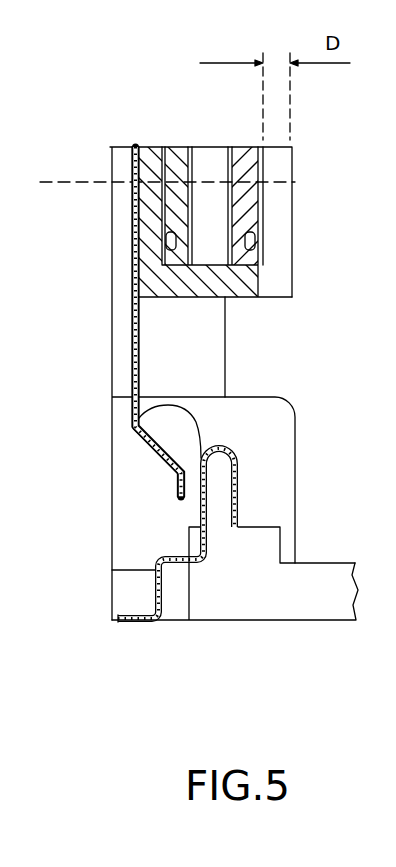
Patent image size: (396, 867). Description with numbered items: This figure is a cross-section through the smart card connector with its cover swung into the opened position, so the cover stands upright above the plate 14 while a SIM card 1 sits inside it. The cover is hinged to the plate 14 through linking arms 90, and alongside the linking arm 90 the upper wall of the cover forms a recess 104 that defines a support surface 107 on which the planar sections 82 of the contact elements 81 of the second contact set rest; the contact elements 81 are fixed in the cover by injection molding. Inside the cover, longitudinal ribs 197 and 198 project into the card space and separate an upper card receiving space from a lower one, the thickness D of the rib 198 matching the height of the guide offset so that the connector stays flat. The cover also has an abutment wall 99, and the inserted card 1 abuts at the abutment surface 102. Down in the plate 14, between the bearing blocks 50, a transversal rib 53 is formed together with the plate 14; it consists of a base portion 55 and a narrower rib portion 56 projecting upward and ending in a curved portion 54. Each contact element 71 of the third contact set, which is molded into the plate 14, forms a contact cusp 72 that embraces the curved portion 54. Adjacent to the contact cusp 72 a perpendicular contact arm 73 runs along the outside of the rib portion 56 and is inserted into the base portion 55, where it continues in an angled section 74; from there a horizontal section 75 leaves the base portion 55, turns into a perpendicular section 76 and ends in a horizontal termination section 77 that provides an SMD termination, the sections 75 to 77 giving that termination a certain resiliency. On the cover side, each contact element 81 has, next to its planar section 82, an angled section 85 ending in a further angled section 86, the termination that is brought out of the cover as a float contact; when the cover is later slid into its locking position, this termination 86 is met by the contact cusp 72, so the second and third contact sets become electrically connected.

The SIM card 1 is at (170, 144).
The plate 14 is at (322, 590).
The bearing block 50 is at (264, 422).
The transversal rib 53 is at (222, 515).
The curved portion 54 is at (132, 416).
The base portion 55 is at (270, 543).
The rib portion 56 is at (203, 480).
The contact element 71 is at (216, 533).
The contact cusp 72 is at (236, 452).
The contact arm 73 is at (220, 480).
The angled section 74 is at (212, 550).
The horizontal section 75 is at (189, 588).
The perpendicular section 76 is at (189, 593).
The horizontal termination section 77 is at (130, 623).
The contact element 81 is at (127, 350).
The planar section 82 is at (132, 318).
The angled section 85 is at (152, 447).
The angled section 86 is at (174, 487).
The linking arm 90 is at (215, 366).
The abutment wall 99 is at (195, 297).
The abutment surface 102 is at (164, 238).
The recess 104 is at (124, 176).
The support surface 107 is at (142, 266).
The longitudinal rib 197 is at (207, 146).
The longitudinal rib 198 is at (282, 201).